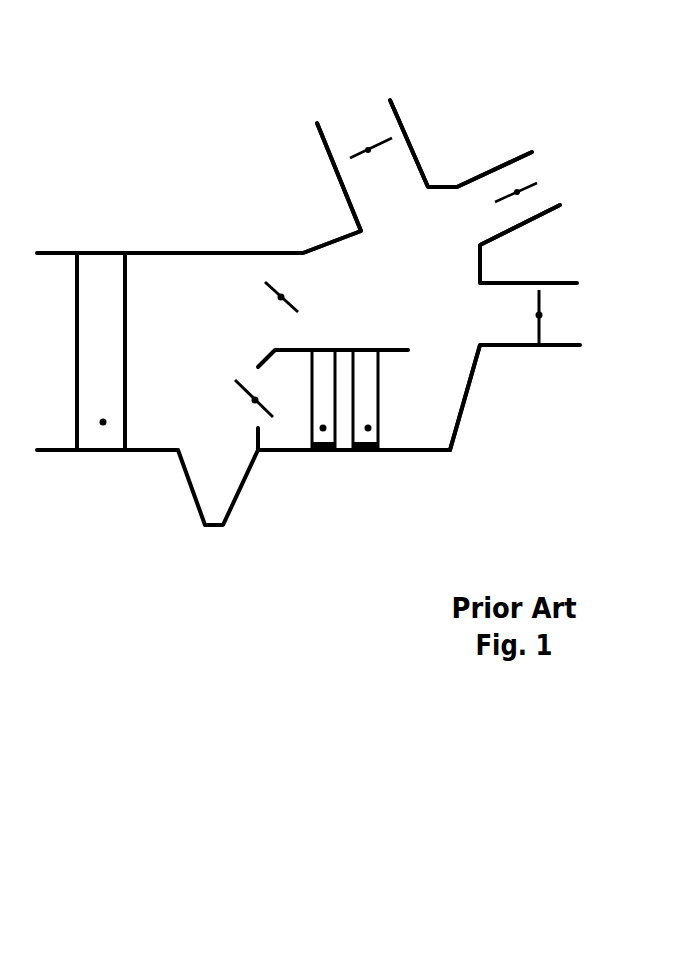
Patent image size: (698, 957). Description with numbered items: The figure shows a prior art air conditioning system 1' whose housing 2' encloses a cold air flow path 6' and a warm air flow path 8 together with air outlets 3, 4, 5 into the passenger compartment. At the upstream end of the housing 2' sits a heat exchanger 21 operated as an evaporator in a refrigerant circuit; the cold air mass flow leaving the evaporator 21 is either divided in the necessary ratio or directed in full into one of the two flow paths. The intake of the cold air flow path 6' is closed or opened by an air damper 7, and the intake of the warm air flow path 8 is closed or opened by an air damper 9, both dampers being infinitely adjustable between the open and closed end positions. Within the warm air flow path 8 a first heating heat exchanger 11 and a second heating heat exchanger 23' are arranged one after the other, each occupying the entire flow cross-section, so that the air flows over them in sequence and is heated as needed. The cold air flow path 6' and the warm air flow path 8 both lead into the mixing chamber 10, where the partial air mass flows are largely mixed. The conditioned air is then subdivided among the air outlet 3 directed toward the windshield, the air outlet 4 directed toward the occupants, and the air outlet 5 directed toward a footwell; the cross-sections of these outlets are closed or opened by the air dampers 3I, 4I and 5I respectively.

The air conditioning system 1' is at (655, 91).
The housing 2' is at (170, 202).
The heat exchanger operated as an evaporator 21 is at (103, 422).
The air outlet 3 is at (375, 185).
The air damper 3I is at (368, 150).
The air outlet 4 is at (473, 218).
The air damper 4I is at (517, 192).
The air outlet 5 is at (501, 325).
The air damper 5I is at (539, 315).
The cold air flow path 6' is at (332, 269).
The air damper 7 is at (281, 297).
The warm air flow path 8 is at (415, 408).
The air damper 9 is at (255, 400).
The mixing chamber 10 is at (408, 303).
The first heating heat exchanger 11 is at (323, 428).
The second heating heat exchanger 23' is at (380, 445).